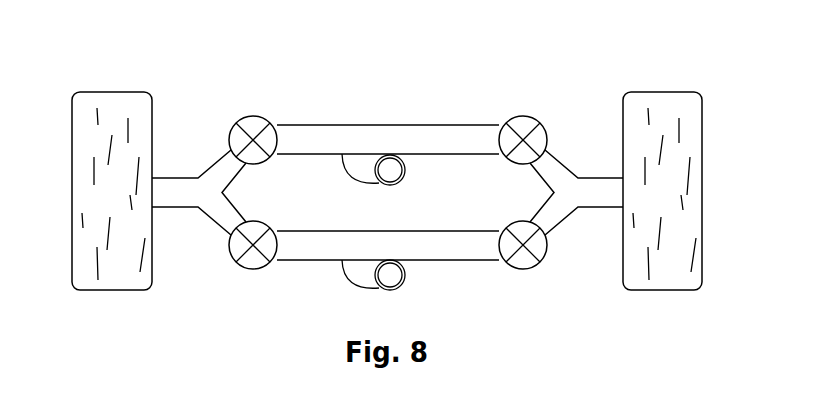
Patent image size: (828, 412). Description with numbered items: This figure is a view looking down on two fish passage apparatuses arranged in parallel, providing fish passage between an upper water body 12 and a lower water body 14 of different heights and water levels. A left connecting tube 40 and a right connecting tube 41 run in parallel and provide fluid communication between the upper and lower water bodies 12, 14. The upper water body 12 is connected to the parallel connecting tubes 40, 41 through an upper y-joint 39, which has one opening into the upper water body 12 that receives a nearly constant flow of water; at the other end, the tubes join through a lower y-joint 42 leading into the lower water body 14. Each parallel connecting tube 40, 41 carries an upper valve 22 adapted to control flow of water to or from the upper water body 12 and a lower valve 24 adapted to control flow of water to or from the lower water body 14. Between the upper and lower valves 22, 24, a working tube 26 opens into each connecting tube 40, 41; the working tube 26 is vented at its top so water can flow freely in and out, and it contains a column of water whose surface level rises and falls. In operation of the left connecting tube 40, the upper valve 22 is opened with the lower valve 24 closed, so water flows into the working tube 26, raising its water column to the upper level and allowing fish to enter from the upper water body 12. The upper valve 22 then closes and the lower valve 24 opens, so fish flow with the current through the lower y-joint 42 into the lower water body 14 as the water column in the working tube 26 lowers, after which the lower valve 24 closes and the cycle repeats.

The upper water body 12 is at (115, 110).
The lower water body 14 is at (658, 110).
The upper valve 22 is at (255, 123).
The lower valve 24 is at (523, 121).
The working tube 26 is at (395, 173).
The upper y-joint 39 is at (190, 177).
The left connecting tube 40 is at (357, 130).
The right connecting tube 41 is at (307, 253).
The lower y-joint 42 is at (602, 178).